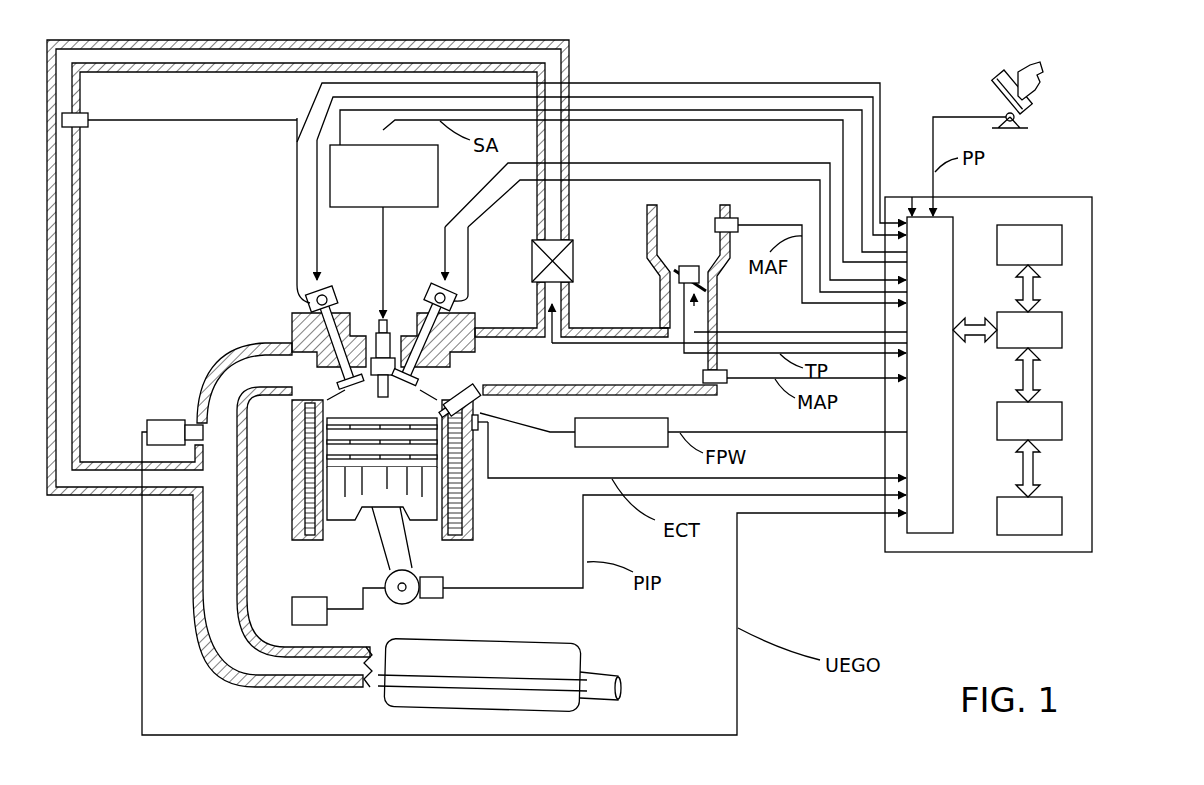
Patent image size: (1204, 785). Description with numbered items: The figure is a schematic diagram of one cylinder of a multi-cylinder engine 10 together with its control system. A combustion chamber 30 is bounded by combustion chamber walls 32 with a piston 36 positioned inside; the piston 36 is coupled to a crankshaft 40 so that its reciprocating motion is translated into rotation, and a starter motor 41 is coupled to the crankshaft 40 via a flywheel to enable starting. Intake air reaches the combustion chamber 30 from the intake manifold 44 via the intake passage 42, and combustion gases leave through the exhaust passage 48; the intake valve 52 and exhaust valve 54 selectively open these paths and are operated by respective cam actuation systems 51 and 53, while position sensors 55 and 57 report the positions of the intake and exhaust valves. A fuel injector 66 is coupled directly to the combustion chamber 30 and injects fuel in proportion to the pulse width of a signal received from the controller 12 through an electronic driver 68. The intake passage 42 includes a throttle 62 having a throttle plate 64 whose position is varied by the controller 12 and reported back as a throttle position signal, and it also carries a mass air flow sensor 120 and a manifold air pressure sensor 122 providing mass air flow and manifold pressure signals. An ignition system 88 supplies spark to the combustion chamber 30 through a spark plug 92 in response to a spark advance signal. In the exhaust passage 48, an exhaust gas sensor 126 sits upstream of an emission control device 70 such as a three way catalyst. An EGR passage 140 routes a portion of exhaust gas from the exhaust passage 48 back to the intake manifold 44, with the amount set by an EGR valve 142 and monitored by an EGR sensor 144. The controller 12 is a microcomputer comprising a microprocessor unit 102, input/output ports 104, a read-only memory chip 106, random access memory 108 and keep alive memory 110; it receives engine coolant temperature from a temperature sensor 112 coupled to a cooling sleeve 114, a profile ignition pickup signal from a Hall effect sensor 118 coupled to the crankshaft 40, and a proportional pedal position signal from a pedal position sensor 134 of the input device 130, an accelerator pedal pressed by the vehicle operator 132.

The engine 10 is at (208, 234).
The controller 12 is at (1082, 197).
The combustion chamber 30 is at (380, 403).
The combustion chamber walls 32 is at (328, 540).
The piston 36 is at (367, 493).
The crankshaft 40 is at (385, 598).
The starter motor 41 is at (338, 606).
The intake passage 42 is at (688, 287).
The intake manifold 44 is at (596, 338).
The exhaust passage 48 is at (284, 515).
The cam actuation system 51 is at (436, 284).
The intake valve 52 is at (418, 370).
The cam actuation system 53 is at (330, 285).
The exhaust valve 54 is at (345, 375).
The position sensor 55 is at (456, 302).
The position sensor 57 is at (312, 303).
The throttle 62 is at (700, 284).
The throttle plate 64 is at (674, 276).
The fuel injector 66 is at (483, 408).
The electronic driver 68 is at (600, 447).
The emission control device 70 is at (548, 646).
The ignition system 88 is at (345, 145).
The spark plug 92 is at (386, 322).
The microprocessor unit 102 is at (1065, 326).
The input/output ports 104 is at (955, 224).
The read-only memory chip 106 is at (1065, 241).
The random access memory 108 is at (1065, 419).
The keep alive memory 110 is at (1065, 511).
The temperature sensor 112 is at (480, 432).
The cooling sleeve 114 is at (470, 495).
The Hall effect sensor 118 is at (440, 600).
The mass air flow sensor 120 is at (735, 218).
The manifold air pressure sensor 122 is at (728, 385).
The exhaust gas sensor 126 is at (147, 424).
The input device 130 is at (990, 93).
The vehicle operator 132 is at (1050, 75).
The pedal position sensor 134 is at (1030, 118).
The EGR passage 140 is at (300, 40).
The EGR valve 142 is at (574, 262).
The EGR sensor 144 is at (84, 127).